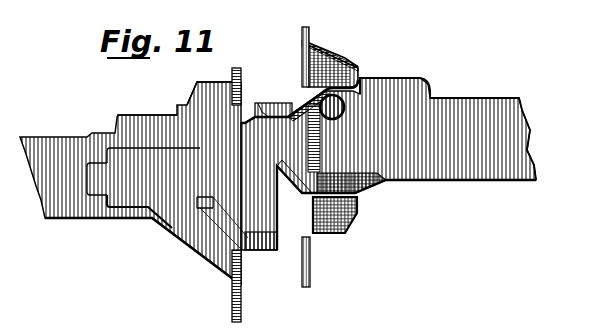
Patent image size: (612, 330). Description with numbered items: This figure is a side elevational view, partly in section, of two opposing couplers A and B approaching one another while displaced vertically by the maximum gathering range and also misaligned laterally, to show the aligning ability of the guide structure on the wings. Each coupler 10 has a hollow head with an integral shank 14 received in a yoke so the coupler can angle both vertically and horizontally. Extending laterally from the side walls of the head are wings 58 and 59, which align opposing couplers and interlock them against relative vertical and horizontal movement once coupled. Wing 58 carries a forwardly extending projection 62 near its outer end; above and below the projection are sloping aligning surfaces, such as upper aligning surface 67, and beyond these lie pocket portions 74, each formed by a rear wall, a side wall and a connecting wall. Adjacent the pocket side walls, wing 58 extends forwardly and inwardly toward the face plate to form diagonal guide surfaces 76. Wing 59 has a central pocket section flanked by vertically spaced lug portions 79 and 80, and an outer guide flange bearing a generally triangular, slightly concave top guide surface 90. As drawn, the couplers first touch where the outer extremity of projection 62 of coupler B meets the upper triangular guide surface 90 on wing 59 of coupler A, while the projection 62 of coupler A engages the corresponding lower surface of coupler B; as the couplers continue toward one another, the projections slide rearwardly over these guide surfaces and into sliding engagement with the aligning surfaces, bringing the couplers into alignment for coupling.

The shank 14 is at (48, 137).
The coupler A is at (130, 114).
The coupler B is at (413, 78).
The coupler 10 is at (192, 91).
The wing 58 is at (367, 78).
The wing 59 is at (211, 274).
The projection 62 is at (275, 104).
The upper aligning surface 67 is at (300, 100).
The pocket portion 74 is at (326, 56).
The diagonal guide surface 76 is at (306, 52).
The lug portion 79 is at (290, 105).
The lug portion 80 is at (262, 251).
The top guide surface 90 is at (259, 102).